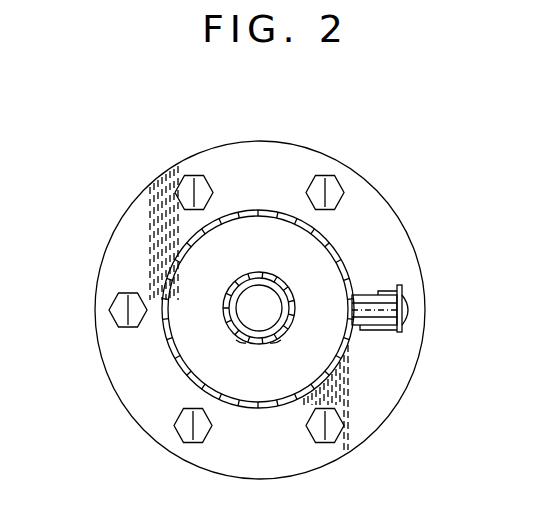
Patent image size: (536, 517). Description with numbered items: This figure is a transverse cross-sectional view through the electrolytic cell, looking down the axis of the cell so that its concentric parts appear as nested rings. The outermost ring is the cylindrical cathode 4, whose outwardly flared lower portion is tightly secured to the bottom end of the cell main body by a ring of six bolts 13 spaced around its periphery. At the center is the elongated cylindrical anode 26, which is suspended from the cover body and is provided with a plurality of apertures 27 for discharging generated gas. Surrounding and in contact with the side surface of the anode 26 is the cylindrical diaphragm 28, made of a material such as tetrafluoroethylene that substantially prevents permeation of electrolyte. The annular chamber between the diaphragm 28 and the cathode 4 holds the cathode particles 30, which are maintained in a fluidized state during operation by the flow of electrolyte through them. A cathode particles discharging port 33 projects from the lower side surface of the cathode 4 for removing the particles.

The cylindrical cathode 4 is at (268, 208).
The bolts 13 is at (190, 178).
The elongated cylindrical anode 26 is at (228, 322).
The apertures 27 is at (276, 343).
The cylindrical diaphragm 28 is at (290, 282).
The cathode particles 30 is at (190, 272).
The cathode particles discharging port 33 is at (371, 302).